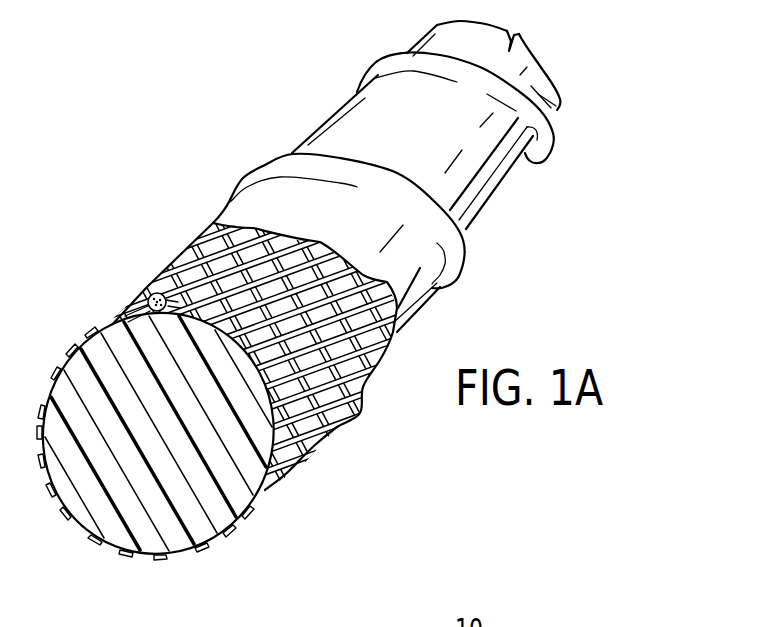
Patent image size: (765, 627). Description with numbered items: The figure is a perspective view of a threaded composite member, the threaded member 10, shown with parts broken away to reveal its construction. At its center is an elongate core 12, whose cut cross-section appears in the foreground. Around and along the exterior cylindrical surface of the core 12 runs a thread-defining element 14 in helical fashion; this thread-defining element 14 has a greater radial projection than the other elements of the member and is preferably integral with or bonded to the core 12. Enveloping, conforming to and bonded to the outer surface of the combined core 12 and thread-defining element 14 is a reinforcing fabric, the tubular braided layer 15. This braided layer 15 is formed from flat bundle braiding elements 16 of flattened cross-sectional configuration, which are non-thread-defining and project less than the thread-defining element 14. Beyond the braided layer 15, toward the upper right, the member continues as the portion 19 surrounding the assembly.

The cable assembly 10 is at (205, 152).
The insulated core 12 is at (98, 505).
The conductor wire 14 is at (143, 292).
The braided shield 15 is at (318, 425).
The outer jacket segments 16 is at (228, 551).
The sleeve 19 is at (410, 297).